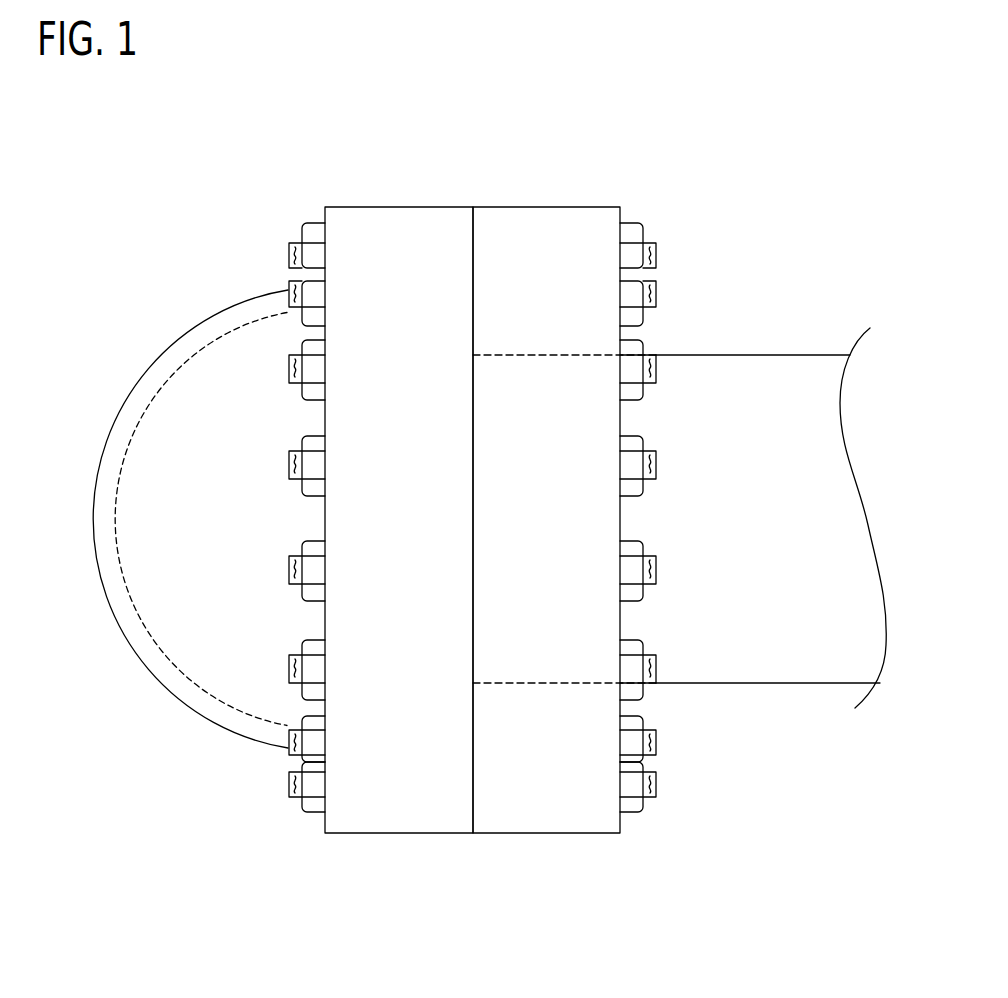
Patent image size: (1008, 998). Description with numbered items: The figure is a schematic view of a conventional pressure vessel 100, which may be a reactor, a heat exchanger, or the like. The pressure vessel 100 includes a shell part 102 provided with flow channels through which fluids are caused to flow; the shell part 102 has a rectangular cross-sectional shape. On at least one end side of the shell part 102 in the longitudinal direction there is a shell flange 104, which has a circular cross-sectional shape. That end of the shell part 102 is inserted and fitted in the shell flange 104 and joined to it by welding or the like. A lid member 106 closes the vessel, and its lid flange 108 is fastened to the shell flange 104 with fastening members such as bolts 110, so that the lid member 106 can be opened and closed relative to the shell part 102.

The pressure vessel 100 is at (160, 250).
The shell part 102 is at (753, 354).
The shell flange 104 is at (548, 206).
The lid member 106 is at (143, 669).
The lid flange 108 is at (400, 206).
The bolts 110 is at (293, 243).